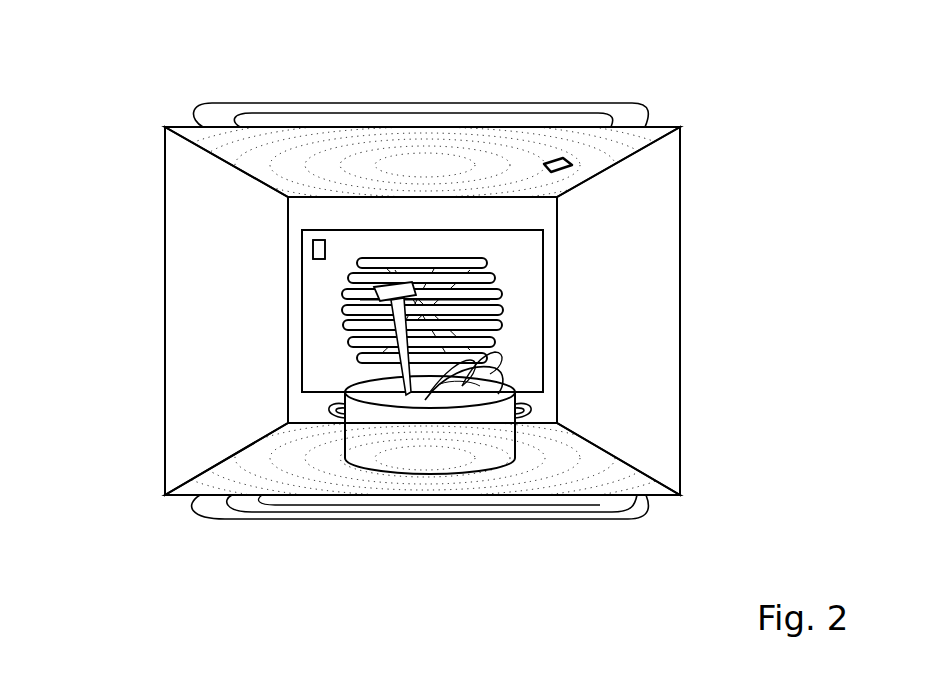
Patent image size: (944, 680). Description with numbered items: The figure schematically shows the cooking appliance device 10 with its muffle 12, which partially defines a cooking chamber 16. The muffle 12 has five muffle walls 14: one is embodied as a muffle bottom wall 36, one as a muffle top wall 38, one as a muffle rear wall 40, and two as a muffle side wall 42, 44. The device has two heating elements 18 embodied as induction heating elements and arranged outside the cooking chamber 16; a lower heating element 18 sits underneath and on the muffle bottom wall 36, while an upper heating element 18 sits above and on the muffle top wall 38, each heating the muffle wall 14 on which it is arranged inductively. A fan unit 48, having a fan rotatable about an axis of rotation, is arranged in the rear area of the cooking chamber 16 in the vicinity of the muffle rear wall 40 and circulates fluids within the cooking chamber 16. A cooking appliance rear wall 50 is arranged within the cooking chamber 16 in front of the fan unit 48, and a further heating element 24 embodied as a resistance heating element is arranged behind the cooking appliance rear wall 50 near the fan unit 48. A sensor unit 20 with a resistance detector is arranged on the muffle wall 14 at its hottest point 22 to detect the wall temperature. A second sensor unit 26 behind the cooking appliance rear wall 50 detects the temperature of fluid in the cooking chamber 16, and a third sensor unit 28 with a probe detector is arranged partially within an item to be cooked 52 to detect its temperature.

The cooking appliance device 10 is at (758, 112).
The muffle 12 is at (650, 287).
The muffle walls 14 is at (435, 317).
The cooking chamber 16 is at (422, 296).
The heating elements 18 is at (371, 112).
The sensor unit 20 is at (558, 156).
The hottest point 22 is at (547, 145).
The further heating element 24 is at (497, 352).
The second sensor unit 26 is at (318, 238).
The third sensor unit 28 is at (343, 310).
The muffle bottom wall 36 is at (645, 497).
The muffle top wall 38 is at (655, 127).
The muffle rear wall 40 is at (298, 219).
The muffle side wall 42 is at (228, 327).
The muffle side wall 44 is at (630, 223).
The fan unit 48 is at (415, 396).
The cooking appliance rear wall 50 is at (323, 276).
The item to be cooked 52 is at (500, 380).